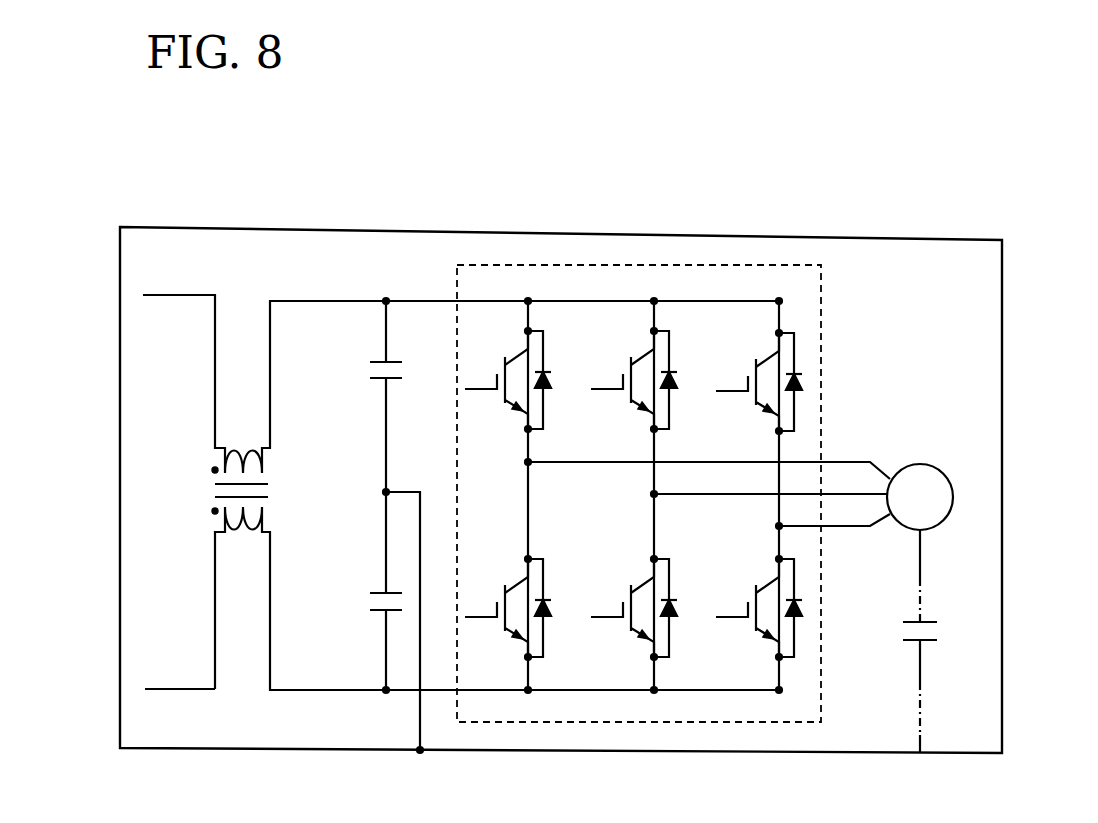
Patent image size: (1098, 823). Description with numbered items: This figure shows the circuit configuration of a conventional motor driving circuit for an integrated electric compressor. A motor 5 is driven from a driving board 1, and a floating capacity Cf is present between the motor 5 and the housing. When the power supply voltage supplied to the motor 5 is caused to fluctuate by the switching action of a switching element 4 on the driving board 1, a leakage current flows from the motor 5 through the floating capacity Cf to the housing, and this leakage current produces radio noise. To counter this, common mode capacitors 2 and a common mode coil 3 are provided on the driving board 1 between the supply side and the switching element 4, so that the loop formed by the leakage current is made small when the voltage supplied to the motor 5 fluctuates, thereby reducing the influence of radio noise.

The driving board 1 is at (888, 270).
The common mode capacitors 2 is at (367, 368).
The common mode coil 3 is at (230, 497).
The switching element 4 is at (717, 267).
The motor 5 is at (953, 498).
The floating capacity Cf is at (932, 622).